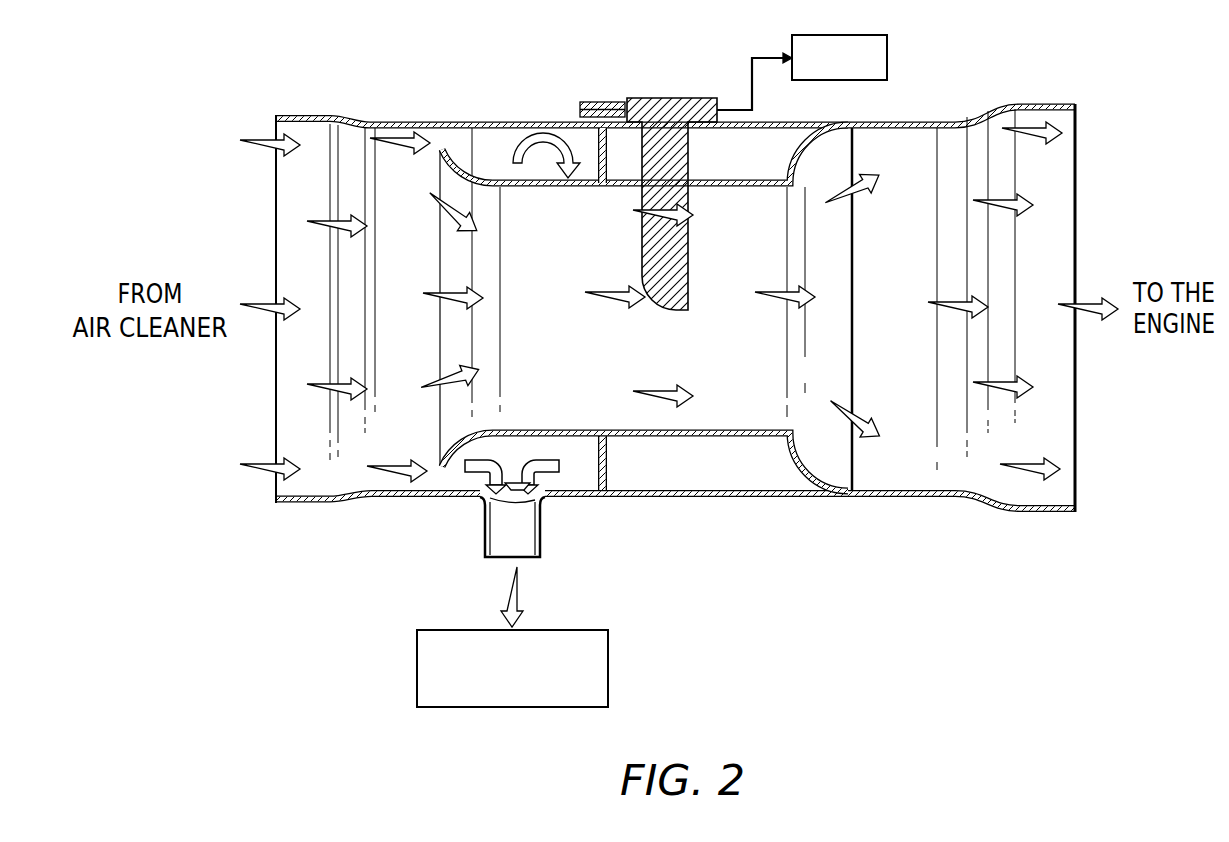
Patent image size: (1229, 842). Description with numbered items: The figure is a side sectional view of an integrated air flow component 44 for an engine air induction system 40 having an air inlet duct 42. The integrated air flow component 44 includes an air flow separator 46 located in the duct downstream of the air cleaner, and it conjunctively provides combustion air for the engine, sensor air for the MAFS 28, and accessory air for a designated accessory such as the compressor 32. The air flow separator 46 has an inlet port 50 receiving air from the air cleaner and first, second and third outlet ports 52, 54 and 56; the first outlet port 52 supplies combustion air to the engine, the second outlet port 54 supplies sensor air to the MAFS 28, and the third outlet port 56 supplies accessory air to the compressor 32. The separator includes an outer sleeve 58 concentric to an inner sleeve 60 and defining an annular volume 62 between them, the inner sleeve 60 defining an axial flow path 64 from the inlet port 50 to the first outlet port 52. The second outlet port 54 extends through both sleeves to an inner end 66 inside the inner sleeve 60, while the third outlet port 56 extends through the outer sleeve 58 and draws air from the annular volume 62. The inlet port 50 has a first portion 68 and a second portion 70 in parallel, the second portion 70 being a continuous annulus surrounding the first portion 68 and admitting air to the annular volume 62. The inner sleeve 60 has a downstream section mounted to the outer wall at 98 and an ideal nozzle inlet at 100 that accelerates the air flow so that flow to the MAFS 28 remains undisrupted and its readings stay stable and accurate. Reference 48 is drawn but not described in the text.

The mass air flow sensor (MAFS) 28 is at (841, 35).
The compressor 32 is at (610, 660).
The engine air induction system 40 is at (341, 97).
The air inlet duct 42 is at (302, 115).
The integrated air flow component 44 is at (847, 133).
The air flow separator 46 is at (452, 172).
The upper chamber inlet opening 48 is at (452, 172).
The inlet port 50 is at (435, 352).
The first outlet port 52 is at (977, 252).
The second outlet port 54 is at (668, 112).
The third outlet port 56 is at (497, 533).
The outer sleeve 58 is at (519, 136).
The inner sleeve 60 is at (552, 192).
The annular volume 62 is at (586, 163).
The axial flow path 64 is at (777, 308).
The inner end 66 is at (658, 298).
The first portion of inlet port 68 is at (457, 427).
The second portion of inlet port 70 is at (452, 472).
The mounting location of inner tube downstream section 98 is at (852, 132).
The ideal nozzle inlet 100 is at (452, 172).